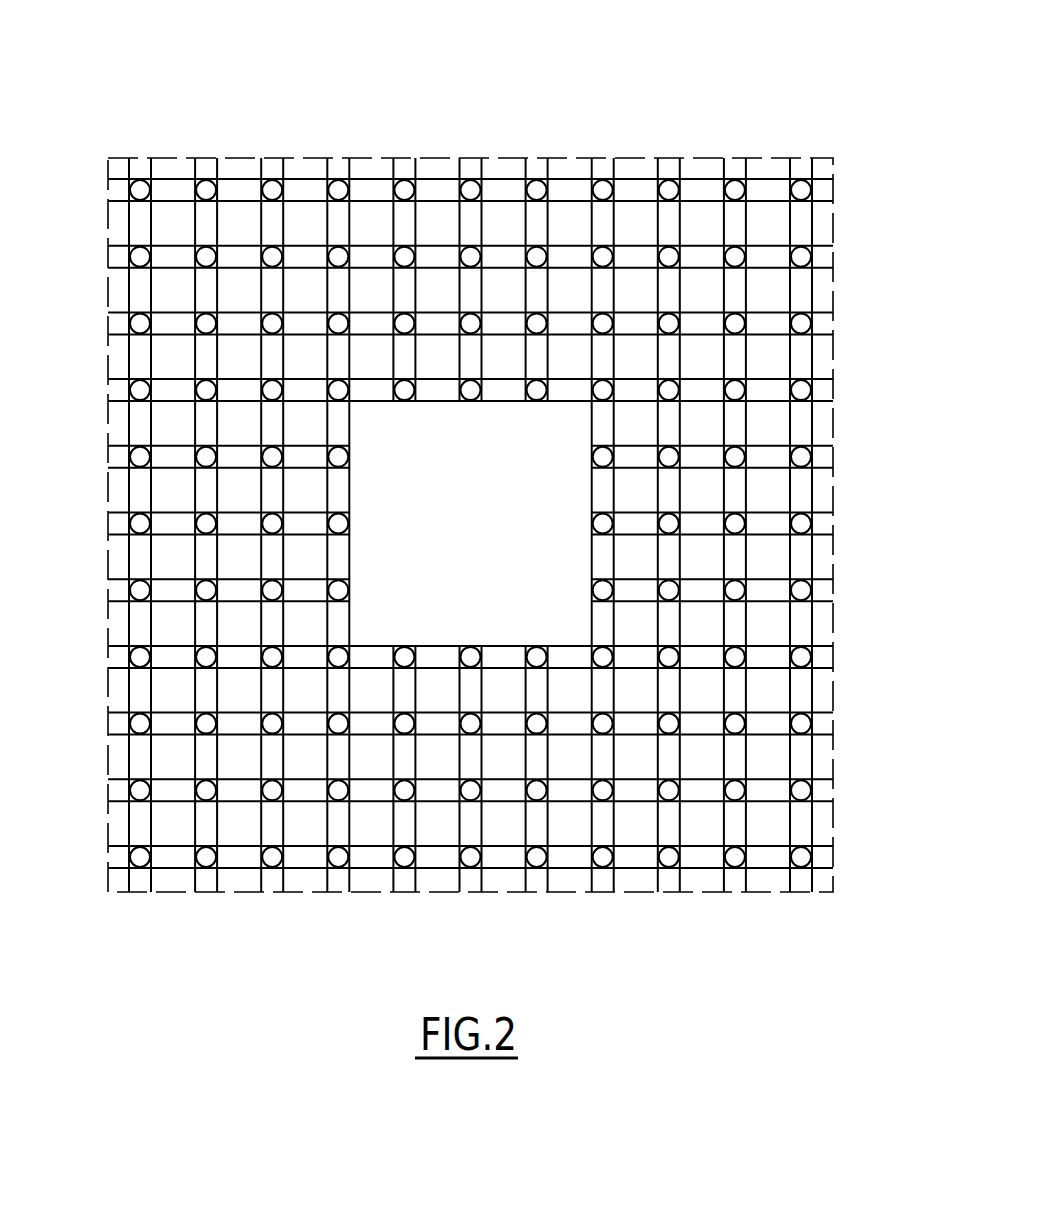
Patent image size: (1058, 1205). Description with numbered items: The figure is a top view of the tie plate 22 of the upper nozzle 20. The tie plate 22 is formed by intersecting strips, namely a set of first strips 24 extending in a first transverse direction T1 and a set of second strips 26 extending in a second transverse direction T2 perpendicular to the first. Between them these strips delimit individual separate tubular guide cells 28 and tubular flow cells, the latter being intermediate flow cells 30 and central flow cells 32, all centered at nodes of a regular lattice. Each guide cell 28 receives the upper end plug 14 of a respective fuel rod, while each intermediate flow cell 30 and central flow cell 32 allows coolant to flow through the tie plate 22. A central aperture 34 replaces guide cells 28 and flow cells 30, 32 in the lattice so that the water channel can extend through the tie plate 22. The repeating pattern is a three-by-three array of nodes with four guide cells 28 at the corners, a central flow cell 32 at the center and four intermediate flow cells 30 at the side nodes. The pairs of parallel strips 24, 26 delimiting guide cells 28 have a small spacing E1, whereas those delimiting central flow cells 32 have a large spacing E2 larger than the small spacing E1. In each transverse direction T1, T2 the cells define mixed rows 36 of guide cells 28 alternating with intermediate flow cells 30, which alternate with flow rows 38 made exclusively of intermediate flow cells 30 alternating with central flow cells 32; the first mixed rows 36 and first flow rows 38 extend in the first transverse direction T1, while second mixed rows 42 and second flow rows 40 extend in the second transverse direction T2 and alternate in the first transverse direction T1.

The upper end plug 14 is at (130, 196).
The upper nozzle 20 is at (661, 99).
The tie plate 22 is at (453, 156).
The first strips 24 is at (151, 893).
The second strips 26 is at (112, 313).
The guide cell 28 is at (196, 181).
The intermediate flow cell 30 is at (449, 535).
The central flow cell 32 is at (470, 542).
The central aperture 34 is at (484, 527).
The mixed row 36 is at (207, 899).
The flow row 38 is at (237, 900).
The second flow row 40 is at (105, 758).
The second mixed row 42 is at (103, 724).
The small spacing E1 is at (78, 535).
The large spacing E2 is at (78, 355).
The first transverse direction T1 is at (467, 925).
The second transverse direction T2 is at (893, 533).